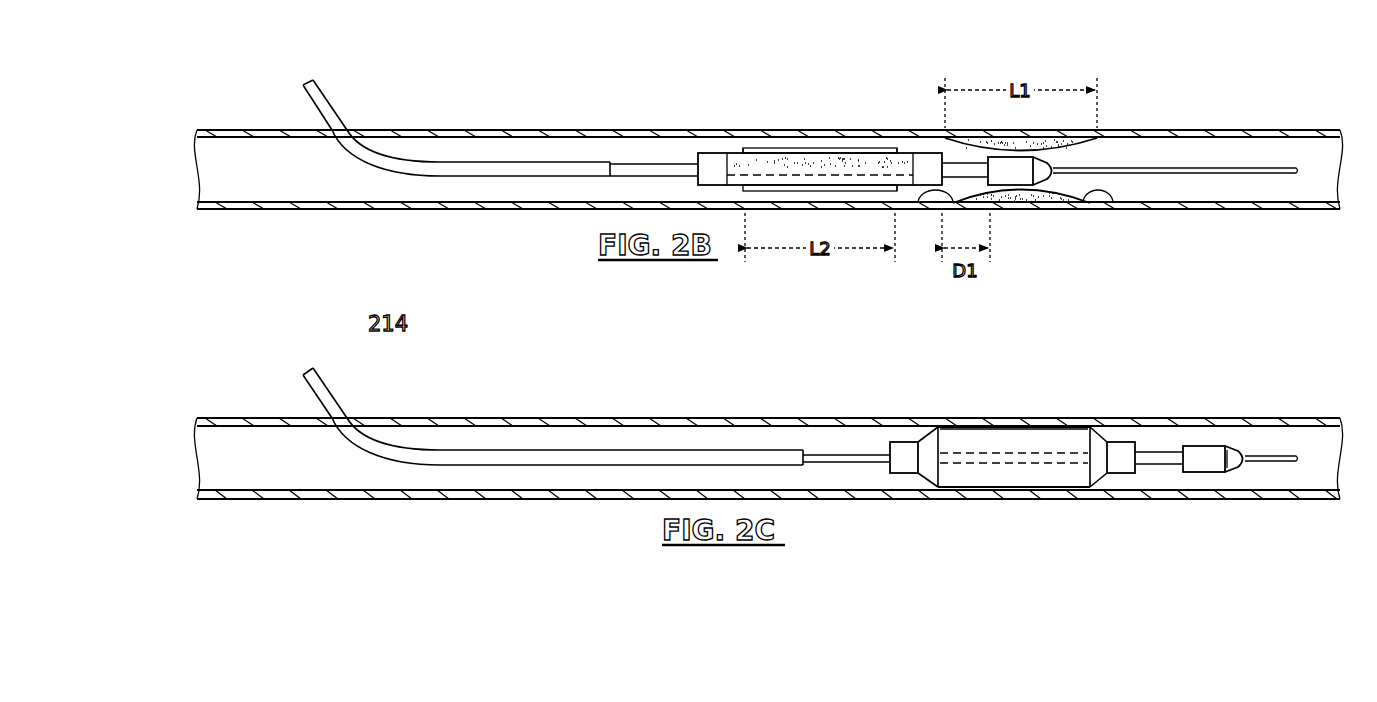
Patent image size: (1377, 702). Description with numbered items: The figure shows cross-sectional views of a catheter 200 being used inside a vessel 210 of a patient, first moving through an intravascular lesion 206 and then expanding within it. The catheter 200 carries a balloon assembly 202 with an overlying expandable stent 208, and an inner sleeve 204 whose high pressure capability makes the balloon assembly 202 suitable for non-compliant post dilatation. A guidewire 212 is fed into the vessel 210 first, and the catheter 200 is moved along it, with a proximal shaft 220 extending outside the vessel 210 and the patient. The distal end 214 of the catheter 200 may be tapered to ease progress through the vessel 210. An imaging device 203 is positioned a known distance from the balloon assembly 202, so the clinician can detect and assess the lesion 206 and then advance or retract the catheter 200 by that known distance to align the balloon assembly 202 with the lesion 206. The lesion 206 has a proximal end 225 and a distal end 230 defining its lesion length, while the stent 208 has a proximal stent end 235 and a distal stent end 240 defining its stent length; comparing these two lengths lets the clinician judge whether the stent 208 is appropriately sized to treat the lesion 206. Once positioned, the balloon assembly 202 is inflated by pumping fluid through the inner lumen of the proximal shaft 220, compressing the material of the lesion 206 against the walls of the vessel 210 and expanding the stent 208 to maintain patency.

In FIG. 2B, the catheter 200 is at (692, 55).
In FIG. 2C, the catheter 200 is at (912, 392).
In FIG. 2B, the balloon assembly 202 is at (792, 158).
In FIG. 2C, the balloon assembly 202 is at (1025, 440).
In FIG. 2B, the imaging device 203 is at (1013, 173).
In FIG. 2C, the imaging device 203 is at (1195, 455).
In FIG. 2B, the inner sleeve 204 is at (832, 160).
In FIG. 2C, the inner sleeve 204 is at (975, 450).
In FIG. 2B, the intravascular lesion 206 is at (1085, 150).
In FIG. 2B, the expandable stent 208 is at (771, 150).
In FIG. 2C, the expandable stent 208 is at (1078, 425).
In FIG. 2B, the vessel 210 is at (530, 130).
In FIG. 2C, the vessel 210 is at (497, 418).
In FIG. 2B, the guidewire 212 is at (1233, 165).
In FIG. 2C, the guidewire 212 is at (1293, 448).
In FIG. 2B, the distal end 214 is at (1035, 194).
In FIG. 2C, the distal end 214 is at (1235, 455).
In FIG. 2B, the proximal shaft 220 is at (432, 160).
In FIG. 2C, the proximal shaft 220 is at (733, 447).
In FIG. 2B, the proximal end 225 is at (913, 192).
In FIG. 2B, the distal end 230 is at (1105, 199).
In FIG. 2B, the proximal stent end 235 is at (745, 150).
In FIG. 2B, the distal stent end 240 is at (880, 150).